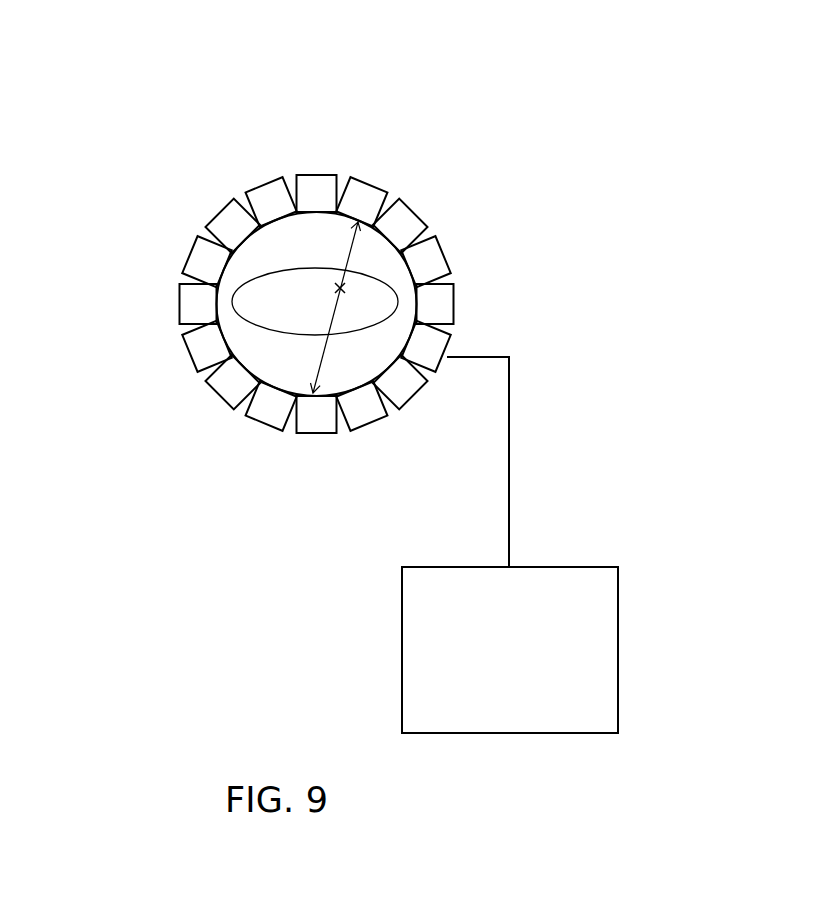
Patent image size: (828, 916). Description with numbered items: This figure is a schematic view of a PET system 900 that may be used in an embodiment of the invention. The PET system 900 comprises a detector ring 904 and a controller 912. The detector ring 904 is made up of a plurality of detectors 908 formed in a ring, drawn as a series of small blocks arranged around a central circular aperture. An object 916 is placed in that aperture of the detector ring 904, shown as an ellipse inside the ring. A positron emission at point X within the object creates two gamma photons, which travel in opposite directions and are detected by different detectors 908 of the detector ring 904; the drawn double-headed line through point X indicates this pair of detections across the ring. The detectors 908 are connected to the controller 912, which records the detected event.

The PET system 900 is at (223, 87).
The detector ring 904 is at (208, 213).
The detectors 908 is at (190, 345).
The controller 912 is at (510, 545).
The object 916 is at (362, 323).